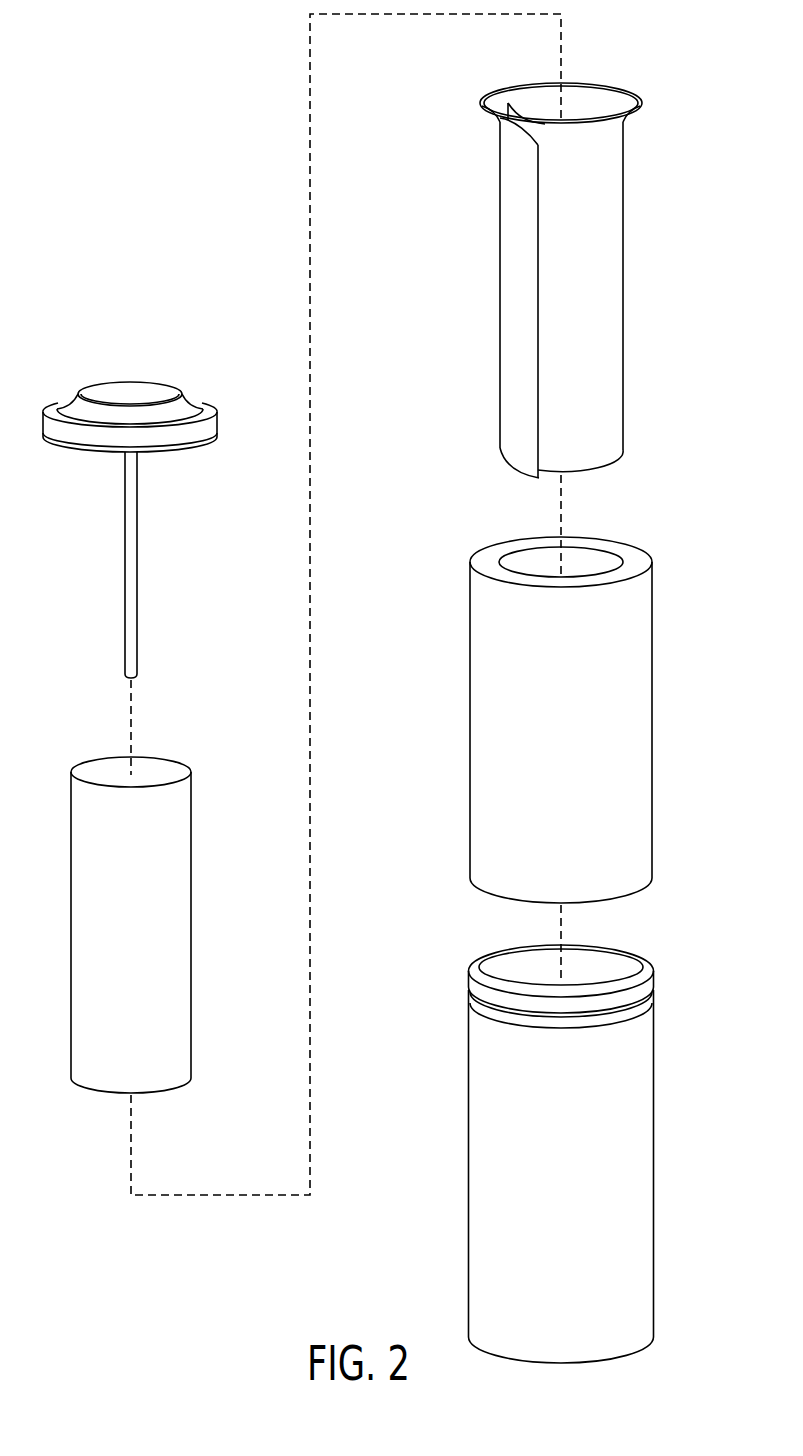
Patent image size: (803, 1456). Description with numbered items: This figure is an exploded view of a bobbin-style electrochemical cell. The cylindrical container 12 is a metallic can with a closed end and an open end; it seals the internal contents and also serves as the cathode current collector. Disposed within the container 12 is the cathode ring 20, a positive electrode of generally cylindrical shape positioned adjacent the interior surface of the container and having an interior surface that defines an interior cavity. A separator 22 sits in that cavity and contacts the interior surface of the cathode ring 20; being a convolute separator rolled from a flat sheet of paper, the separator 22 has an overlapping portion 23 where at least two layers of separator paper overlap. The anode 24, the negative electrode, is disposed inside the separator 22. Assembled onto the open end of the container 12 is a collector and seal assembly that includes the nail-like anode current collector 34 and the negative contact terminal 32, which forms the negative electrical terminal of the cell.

The cylindrical container 12 is at (640, 1148).
The cathode ring 20 is at (640, 755).
The separator 22 is at (617, 293).
The overlapping portion 23 is at (538, 145).
The anode 24 is at (184, 900).
The negative contact terminal 32 is at (133, 388).
The anode current collector 34 is at (134, 590).